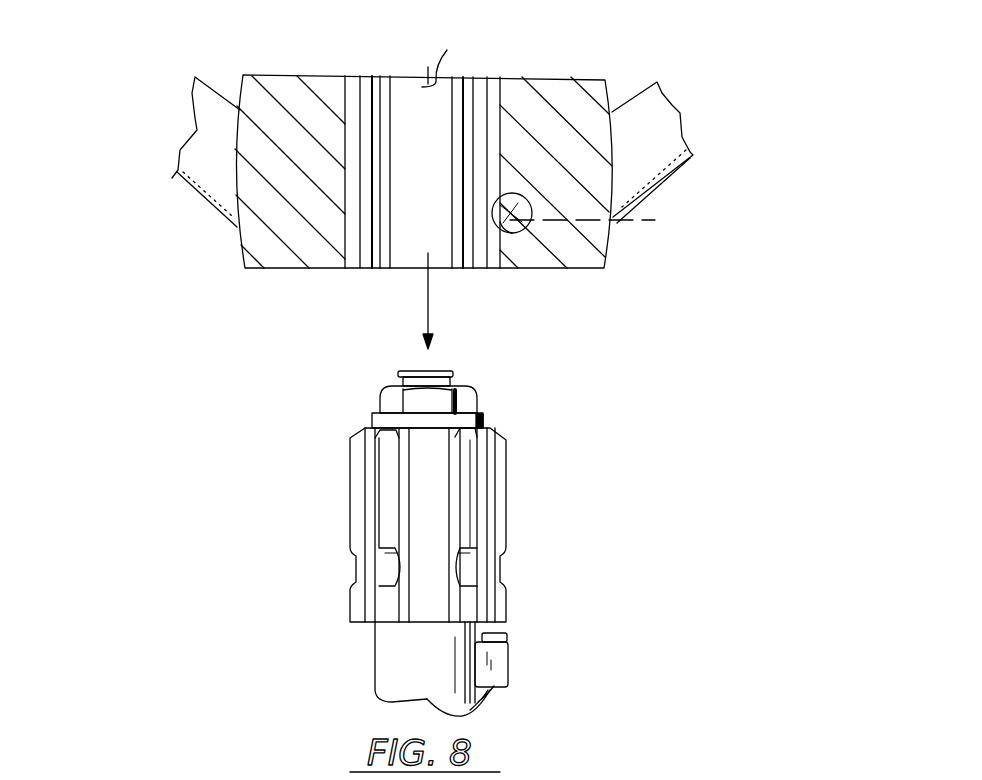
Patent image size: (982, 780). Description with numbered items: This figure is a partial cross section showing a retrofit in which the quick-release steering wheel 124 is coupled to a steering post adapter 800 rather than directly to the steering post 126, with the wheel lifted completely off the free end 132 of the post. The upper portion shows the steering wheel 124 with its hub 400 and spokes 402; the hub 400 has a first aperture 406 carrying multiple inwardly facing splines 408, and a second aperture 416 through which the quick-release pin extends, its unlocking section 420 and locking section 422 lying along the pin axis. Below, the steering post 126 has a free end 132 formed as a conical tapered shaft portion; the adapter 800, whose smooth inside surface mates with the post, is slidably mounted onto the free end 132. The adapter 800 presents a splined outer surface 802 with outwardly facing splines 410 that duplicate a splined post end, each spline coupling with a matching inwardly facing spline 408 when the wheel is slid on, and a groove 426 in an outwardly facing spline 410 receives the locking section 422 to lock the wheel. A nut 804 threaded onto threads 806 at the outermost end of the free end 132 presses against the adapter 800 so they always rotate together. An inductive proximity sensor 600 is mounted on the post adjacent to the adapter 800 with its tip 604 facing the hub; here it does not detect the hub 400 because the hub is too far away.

The steering wheel 124 is at (297, 71).
The spokes 402 is at (198, 130).
The first aperture 406 is at (455, 54).
The inwardly facing splines 408 is at (497, 78).
The hub 400 is at (583, 79).
The second aperture 416 is at (528, 198).
The unlocking section 420 is at (611, 220).
The locking section 422 is at (522, 228).
The steering post adapter 800 is at (328, 458).
The splined outer surface 802 is at (442, 490).
The outwardly facing splines 410 is at (385, 503).
The groove 426 is at (385, 573).
The free upper end 132 is at (447, 368).
The threads 806 is at (453, 381).
The nut 804 is at (470, 403).
The steering post 126 is at (380, 648).
The inductive proximity sensor 600 is at (524, 665).
The sensor tip 604 is at (495, 700).